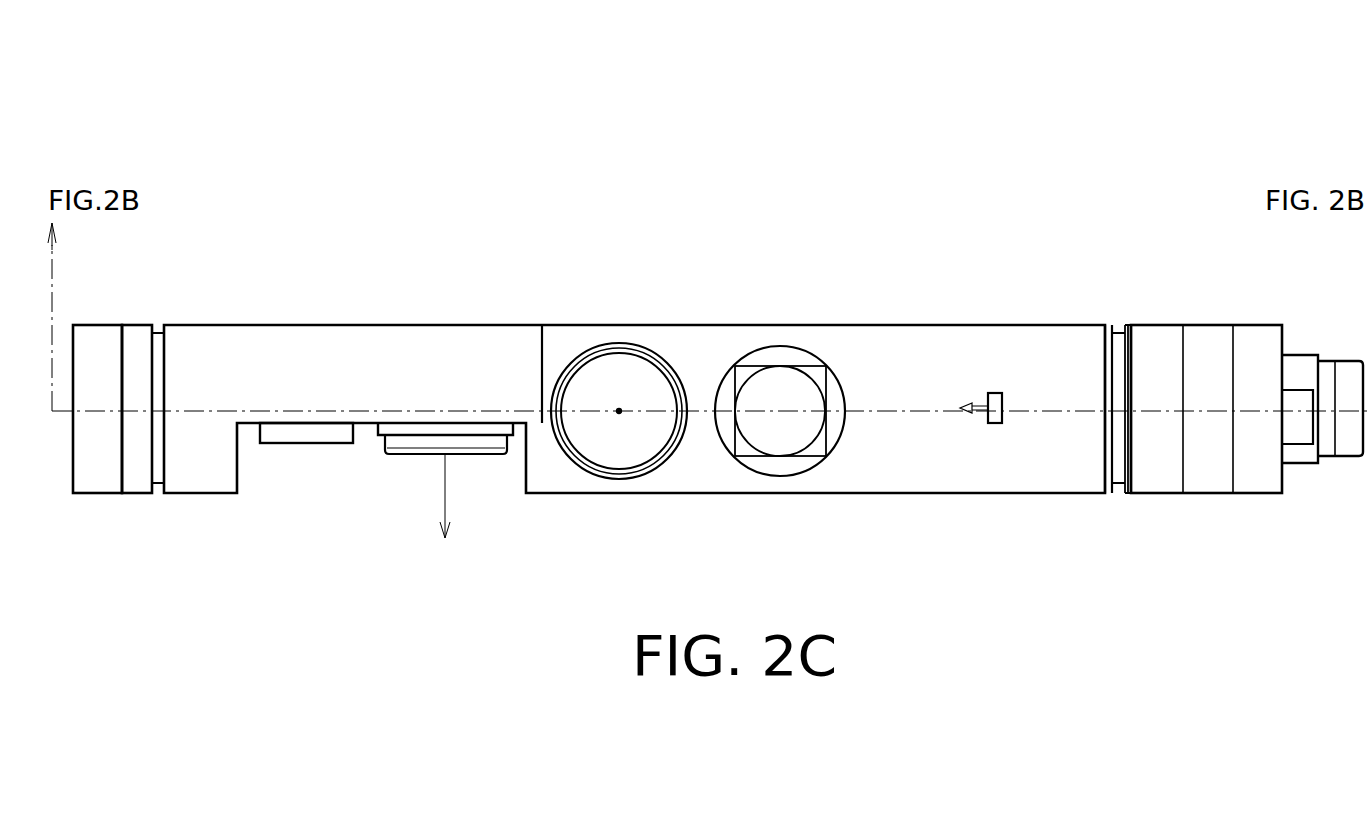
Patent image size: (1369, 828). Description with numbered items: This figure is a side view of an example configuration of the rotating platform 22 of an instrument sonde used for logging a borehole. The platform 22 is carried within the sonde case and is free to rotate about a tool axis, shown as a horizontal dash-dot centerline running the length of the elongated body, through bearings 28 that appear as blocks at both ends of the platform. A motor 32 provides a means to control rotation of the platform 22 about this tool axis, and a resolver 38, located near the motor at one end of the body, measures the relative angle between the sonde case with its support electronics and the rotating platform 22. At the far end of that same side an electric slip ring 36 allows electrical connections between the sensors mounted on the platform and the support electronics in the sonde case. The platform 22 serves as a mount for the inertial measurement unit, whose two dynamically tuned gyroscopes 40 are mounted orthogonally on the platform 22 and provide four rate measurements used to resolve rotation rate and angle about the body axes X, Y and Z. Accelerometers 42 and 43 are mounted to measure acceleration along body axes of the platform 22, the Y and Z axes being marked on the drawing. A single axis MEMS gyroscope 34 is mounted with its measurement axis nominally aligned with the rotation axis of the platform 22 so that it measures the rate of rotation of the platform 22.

The rotating platform 22 is at (852, 492).
The bearings 28 is at (110, 325).
The motor 32 is at (1205, 325).
The single axis MEMS gyroscope 34 is at (990, 393).
The electric slip ring 36 is at (1340, 462).
The resolver 38 is at (1161, 325).
The dynamically tuned gyroscopes 40 is at (780, 400).
The accelerometer 42 is at (408, 455).
The accelerometer 43 is at (610, 392).